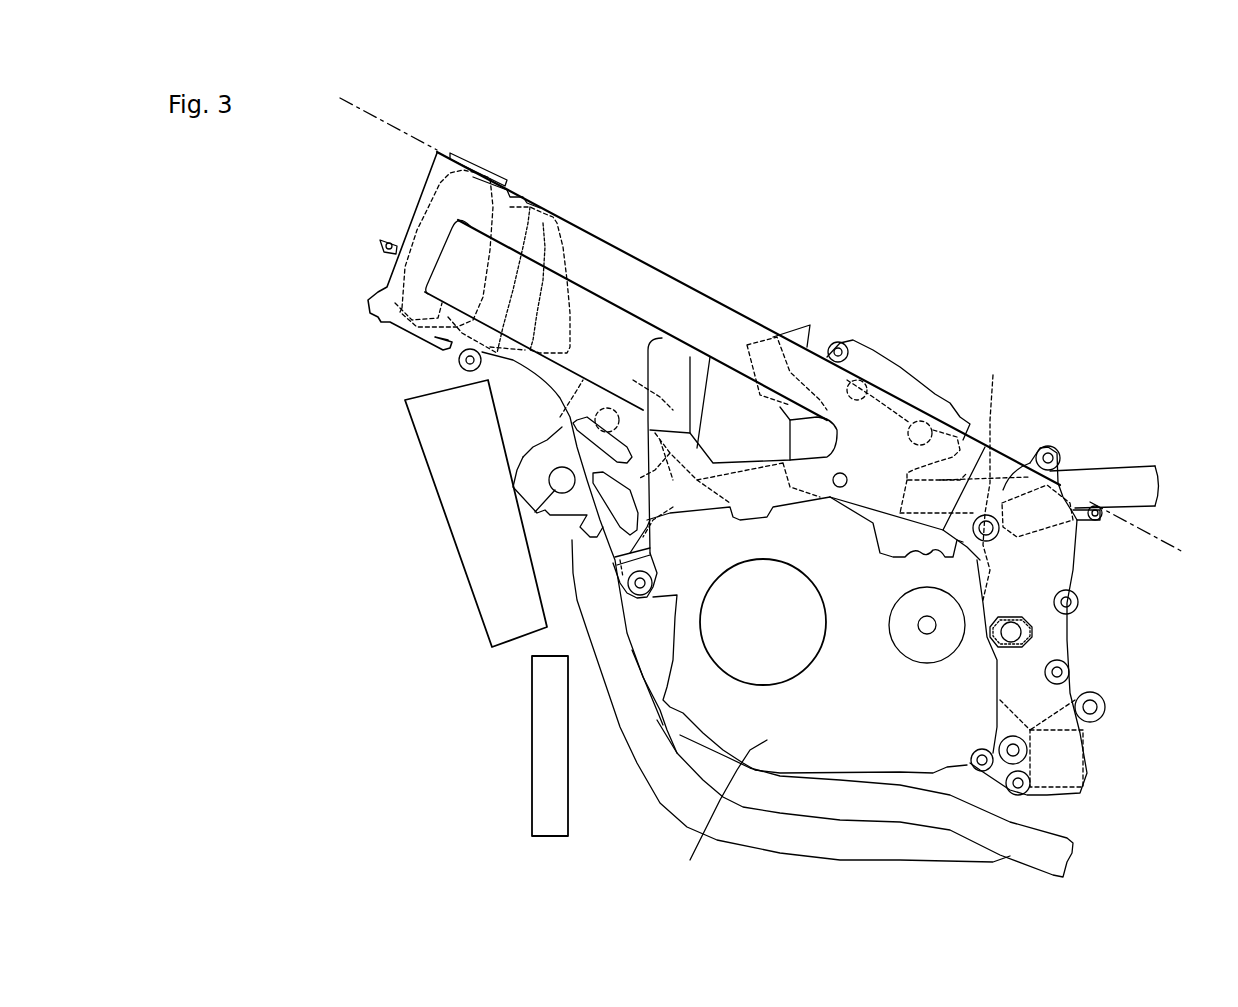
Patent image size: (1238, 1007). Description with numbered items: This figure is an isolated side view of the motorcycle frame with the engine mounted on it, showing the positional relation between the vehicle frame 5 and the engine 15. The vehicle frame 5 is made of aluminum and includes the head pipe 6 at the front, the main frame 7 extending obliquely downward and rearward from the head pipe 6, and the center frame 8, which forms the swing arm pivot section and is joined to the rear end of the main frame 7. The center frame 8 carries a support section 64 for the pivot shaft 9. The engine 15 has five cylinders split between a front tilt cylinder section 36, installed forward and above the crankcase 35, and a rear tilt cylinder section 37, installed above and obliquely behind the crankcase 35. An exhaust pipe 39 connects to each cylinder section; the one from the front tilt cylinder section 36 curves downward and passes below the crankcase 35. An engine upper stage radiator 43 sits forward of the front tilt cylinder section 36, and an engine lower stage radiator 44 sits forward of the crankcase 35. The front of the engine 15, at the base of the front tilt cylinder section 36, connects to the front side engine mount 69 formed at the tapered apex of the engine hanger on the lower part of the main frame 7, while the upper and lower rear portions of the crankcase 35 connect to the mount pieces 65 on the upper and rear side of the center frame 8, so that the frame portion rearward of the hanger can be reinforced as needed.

The vehicle frame 5 is at (700, 214).
The head pipe 6 is at (381, 211).
The main frame 7 is at (739, 310).
The center frame 8 is at (1078, 574).
The pivot shaft 9 is at (1017, 640).
The engine 15 is at (683, 712).
The crankcase 35 is at (624, 616).
The front tilt cylinder section 36 is at (523, 457).
The rear tilt cylinder section 37 is at (915, 382).
The exhaust pipe 39 is at (640, 830).
The engine upper stage radiator 43 is at (467, 577).
The engine lower stage radiator 44 is at (532, 788).
The support section 64 is at (1028, 627).
The mount piece 65 is at (985, 520).
The front side engine mount 69 is at (640, 583).